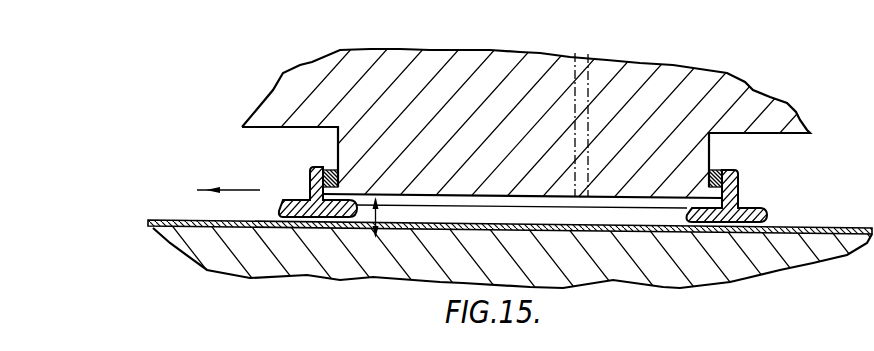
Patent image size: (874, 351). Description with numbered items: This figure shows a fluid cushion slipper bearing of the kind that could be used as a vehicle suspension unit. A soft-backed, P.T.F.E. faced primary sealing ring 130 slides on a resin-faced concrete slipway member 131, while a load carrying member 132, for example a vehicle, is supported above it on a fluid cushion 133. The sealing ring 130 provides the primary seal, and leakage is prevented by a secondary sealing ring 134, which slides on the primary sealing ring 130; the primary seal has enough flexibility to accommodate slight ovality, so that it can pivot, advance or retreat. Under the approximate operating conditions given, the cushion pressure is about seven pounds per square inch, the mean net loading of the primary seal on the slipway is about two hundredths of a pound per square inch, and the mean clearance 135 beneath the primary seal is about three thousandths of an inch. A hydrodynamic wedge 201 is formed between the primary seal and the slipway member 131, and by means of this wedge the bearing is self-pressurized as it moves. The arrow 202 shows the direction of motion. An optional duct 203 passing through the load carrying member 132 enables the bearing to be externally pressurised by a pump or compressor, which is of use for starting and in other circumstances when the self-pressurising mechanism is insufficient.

The primary sealing ring 130 is at (732, 195).
The slipway member 131 is at (412, 250).
The load carrying member 132 is at (507, 70).
The fluid cushion 133 is at (348, 197).
The secondary sealing ring 134 is at (716, 170).
The mean clearance 135 is at (376, 236).
The hydrodynamic wedge 201 is at (290, 219).
The arrow 202 is at (238, 188).
The duct 203 is at (583, 57).